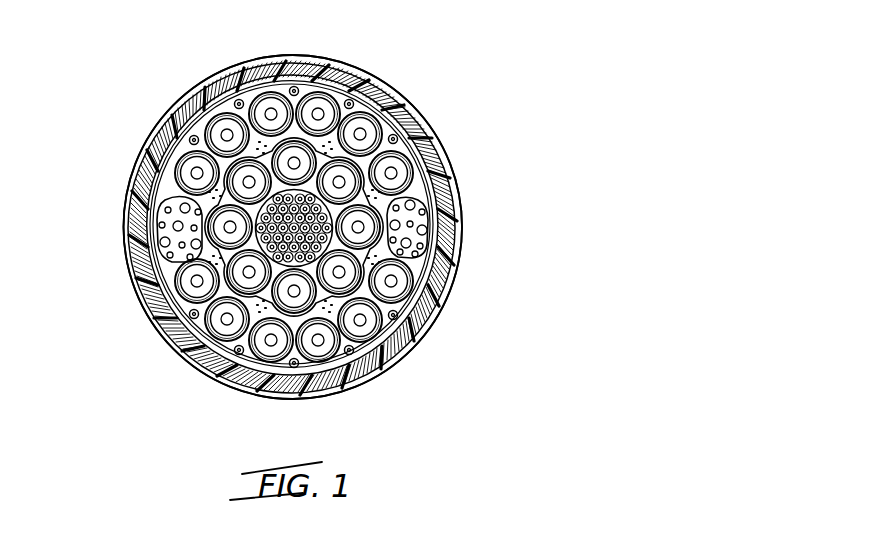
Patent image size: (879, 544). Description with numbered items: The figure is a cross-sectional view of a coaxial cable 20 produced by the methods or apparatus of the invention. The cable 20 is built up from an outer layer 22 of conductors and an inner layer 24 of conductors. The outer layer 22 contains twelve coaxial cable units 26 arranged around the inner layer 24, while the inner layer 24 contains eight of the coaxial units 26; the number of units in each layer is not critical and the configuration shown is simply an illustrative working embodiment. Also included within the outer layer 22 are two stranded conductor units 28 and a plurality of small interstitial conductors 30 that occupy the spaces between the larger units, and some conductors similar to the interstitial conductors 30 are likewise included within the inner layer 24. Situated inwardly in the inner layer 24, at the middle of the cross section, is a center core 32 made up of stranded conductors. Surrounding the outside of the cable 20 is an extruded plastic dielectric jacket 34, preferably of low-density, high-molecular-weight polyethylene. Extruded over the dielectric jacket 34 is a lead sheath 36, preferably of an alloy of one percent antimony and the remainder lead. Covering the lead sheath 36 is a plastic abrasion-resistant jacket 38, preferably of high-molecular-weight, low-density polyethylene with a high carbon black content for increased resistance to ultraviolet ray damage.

The coaxial cable 20 is at (473, 130).
The outer layer 22 is at (412, 292).
The inner layer 24 is at (358, 347).
The coaxial cable unit 26 is at (412, 128).
The stranded conductor unit 28 is at (160, 250).
The interstitial conductor 30 is at (250, 382).
The center core 32 is at (262, 197).
The dielectric jacket 34 is at (142, 161).
The lead sheath 36 is at (158, 131).
The abrasion-resistant jacket 38 is at (168, 113).